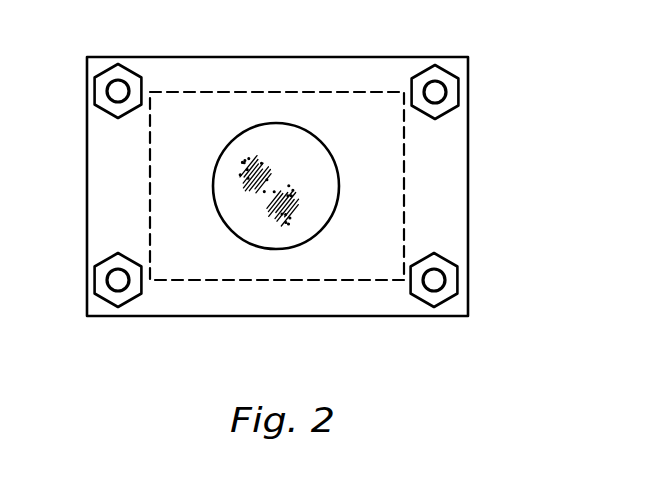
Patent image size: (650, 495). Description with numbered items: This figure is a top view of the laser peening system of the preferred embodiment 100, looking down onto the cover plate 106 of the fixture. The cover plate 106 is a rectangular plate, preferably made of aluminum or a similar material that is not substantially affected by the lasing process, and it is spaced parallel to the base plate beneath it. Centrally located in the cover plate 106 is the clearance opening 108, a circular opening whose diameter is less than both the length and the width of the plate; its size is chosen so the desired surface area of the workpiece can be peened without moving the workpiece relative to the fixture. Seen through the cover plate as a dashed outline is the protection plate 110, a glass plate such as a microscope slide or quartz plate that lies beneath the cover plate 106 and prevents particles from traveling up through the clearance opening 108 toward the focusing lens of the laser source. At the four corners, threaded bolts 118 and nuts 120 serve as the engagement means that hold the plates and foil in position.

The preferred embodiment 100 is at (603, 61).
The cover plate 106 is at (101, 176).
The clearance opening 108 is at (222, 203).
The protection plate 110 is at (245, 100).
The threaded bolts 118 is at (118, 90).
The nuts 120 is at (100, 105).